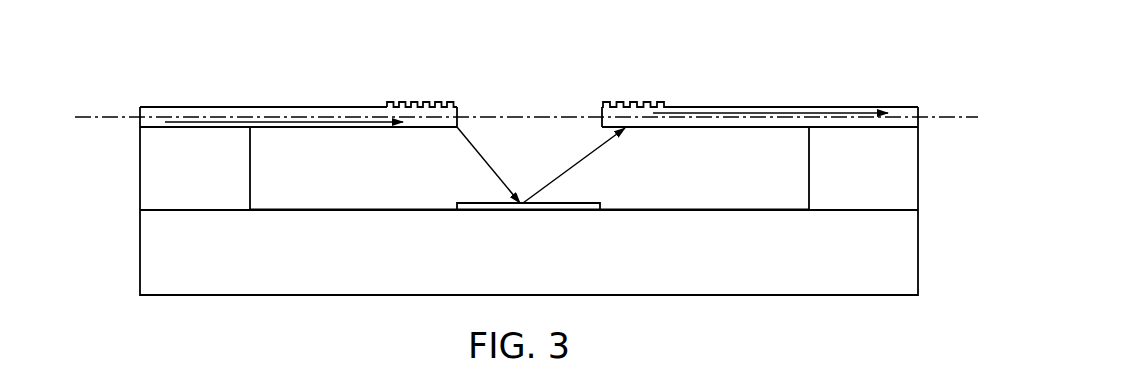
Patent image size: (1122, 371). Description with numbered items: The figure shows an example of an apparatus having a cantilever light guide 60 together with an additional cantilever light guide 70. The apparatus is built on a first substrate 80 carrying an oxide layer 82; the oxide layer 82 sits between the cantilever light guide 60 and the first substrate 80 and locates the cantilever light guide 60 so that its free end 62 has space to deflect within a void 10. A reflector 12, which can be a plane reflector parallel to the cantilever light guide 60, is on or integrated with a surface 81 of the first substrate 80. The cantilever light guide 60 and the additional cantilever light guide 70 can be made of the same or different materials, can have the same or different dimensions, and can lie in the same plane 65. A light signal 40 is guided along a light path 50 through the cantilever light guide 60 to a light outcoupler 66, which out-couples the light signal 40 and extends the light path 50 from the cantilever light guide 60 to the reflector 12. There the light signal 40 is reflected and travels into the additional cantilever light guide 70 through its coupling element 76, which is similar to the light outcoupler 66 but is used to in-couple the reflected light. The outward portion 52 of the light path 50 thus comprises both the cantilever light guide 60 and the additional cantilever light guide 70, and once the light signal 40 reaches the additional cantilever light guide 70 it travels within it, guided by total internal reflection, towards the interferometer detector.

The void 10 is at (529, 161).
The reflector 12 is at (557, 203).
The light signal 40 is at (212, 118).
The light path 50 is at (526, 109).
The outward portion of the light path 52 is at (526, 109).
The cantilever light guide 60 is at (309, 84).
The free end 62 is at (458, 110).
The plane 65 is at (963, 115).
The light outcoupler 66 is at (452, 92).
The additional cantilever light guide 70 is at (760, 83).
The coupling element 76 is at (670, 94).
The first substrate 80 is at (150, 267).
The surface of the first substrate 81 is at (678, 210).
The oxide layer 82 is at (148, 175).